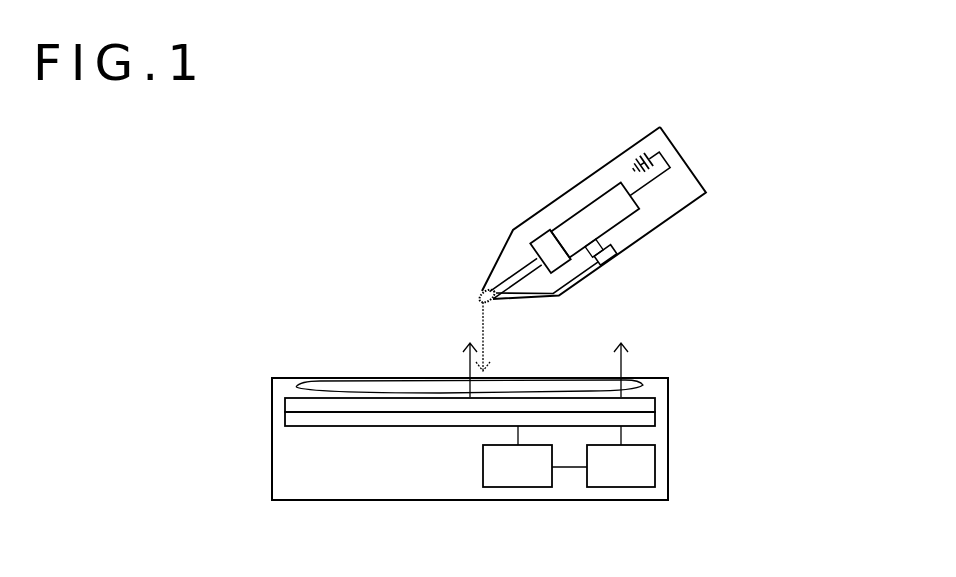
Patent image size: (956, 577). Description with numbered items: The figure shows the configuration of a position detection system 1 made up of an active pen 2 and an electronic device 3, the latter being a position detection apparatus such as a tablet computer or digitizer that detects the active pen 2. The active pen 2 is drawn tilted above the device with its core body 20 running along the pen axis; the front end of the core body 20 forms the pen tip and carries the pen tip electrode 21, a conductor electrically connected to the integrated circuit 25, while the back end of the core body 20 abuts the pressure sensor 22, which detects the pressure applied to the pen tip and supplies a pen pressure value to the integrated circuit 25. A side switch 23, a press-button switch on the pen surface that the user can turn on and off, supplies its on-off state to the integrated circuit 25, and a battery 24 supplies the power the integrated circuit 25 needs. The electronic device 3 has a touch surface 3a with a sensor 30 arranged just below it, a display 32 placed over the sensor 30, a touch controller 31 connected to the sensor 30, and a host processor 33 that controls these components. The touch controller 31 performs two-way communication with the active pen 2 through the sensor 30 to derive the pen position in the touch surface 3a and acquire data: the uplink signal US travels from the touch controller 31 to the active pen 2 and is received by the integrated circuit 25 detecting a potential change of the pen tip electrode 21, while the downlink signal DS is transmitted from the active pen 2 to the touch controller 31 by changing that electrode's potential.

The position detection system 1 is at (307, 203).
The active pen 2 is at (612, 159).
The core body 20 is at (522, 270).
The pen tip electrode 21 is at (482, 291).
The pressure sensor 22 is at (538, 243).
The side switch 23 is at (607, 262).
The battery 24 is at (648, 143).
The integrated circuit 25 is at (628, 213).
The electronic device 3 is at (333, 502).
The touch surface 3a is at (640, 378).
The sensor 30 is at (285, 406).
The touch controller 31 is at (503, 478).
The display 32 is at (285, 419).
The host processor 33 is at (607, 478).
The uplink signal US is at (296, 387).
The downlink signal DS is at (482, 323).